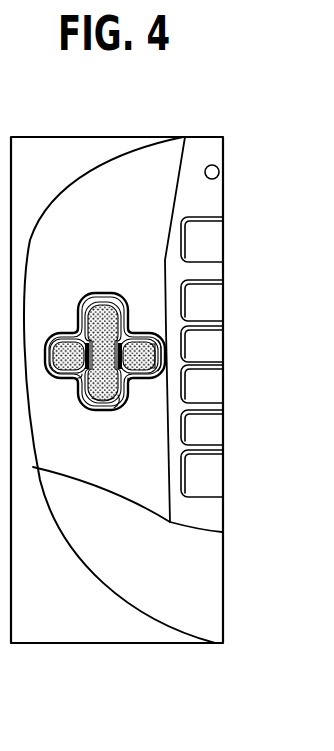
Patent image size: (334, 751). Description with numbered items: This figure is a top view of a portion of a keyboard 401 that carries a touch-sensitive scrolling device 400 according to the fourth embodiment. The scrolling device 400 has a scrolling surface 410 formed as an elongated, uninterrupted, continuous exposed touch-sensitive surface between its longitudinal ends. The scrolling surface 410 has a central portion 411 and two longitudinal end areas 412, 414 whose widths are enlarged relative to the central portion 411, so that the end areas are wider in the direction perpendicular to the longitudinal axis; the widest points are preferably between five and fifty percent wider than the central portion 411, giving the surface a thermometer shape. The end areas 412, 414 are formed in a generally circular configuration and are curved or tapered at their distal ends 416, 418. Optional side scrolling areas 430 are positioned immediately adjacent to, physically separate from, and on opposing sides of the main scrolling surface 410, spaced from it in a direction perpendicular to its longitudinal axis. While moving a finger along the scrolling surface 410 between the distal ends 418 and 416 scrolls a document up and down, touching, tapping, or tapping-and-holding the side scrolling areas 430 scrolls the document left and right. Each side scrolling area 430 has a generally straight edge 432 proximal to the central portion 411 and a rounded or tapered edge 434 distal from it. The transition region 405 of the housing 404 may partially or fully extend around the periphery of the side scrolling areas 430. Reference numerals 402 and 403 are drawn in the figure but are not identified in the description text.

The scrolling device 400 is at (170, 366).
The keyboard 401 is at (158, 164).
The operation buttons 402 is at (214, 340).
The outer frame of cross key 403 is at (77, 328).
The housing 404 is at (97, 232).
The transition region 405 is at (136, 327).
The scrolling surface 410 is at (135, 383).
The central portion 411 is at (83, 373).
The longitudinal end area 412 is at (116, 293).
The longitudinal end area 414 is at (123, 401).
The distal end 416 is at (99, 296).
The distal end 418 is at (103, 399).
The side scrolling area 430 is at (53, 345).
The straight edge 432 is at (161, 341).
The tapered edge 434 is at (157, 358).